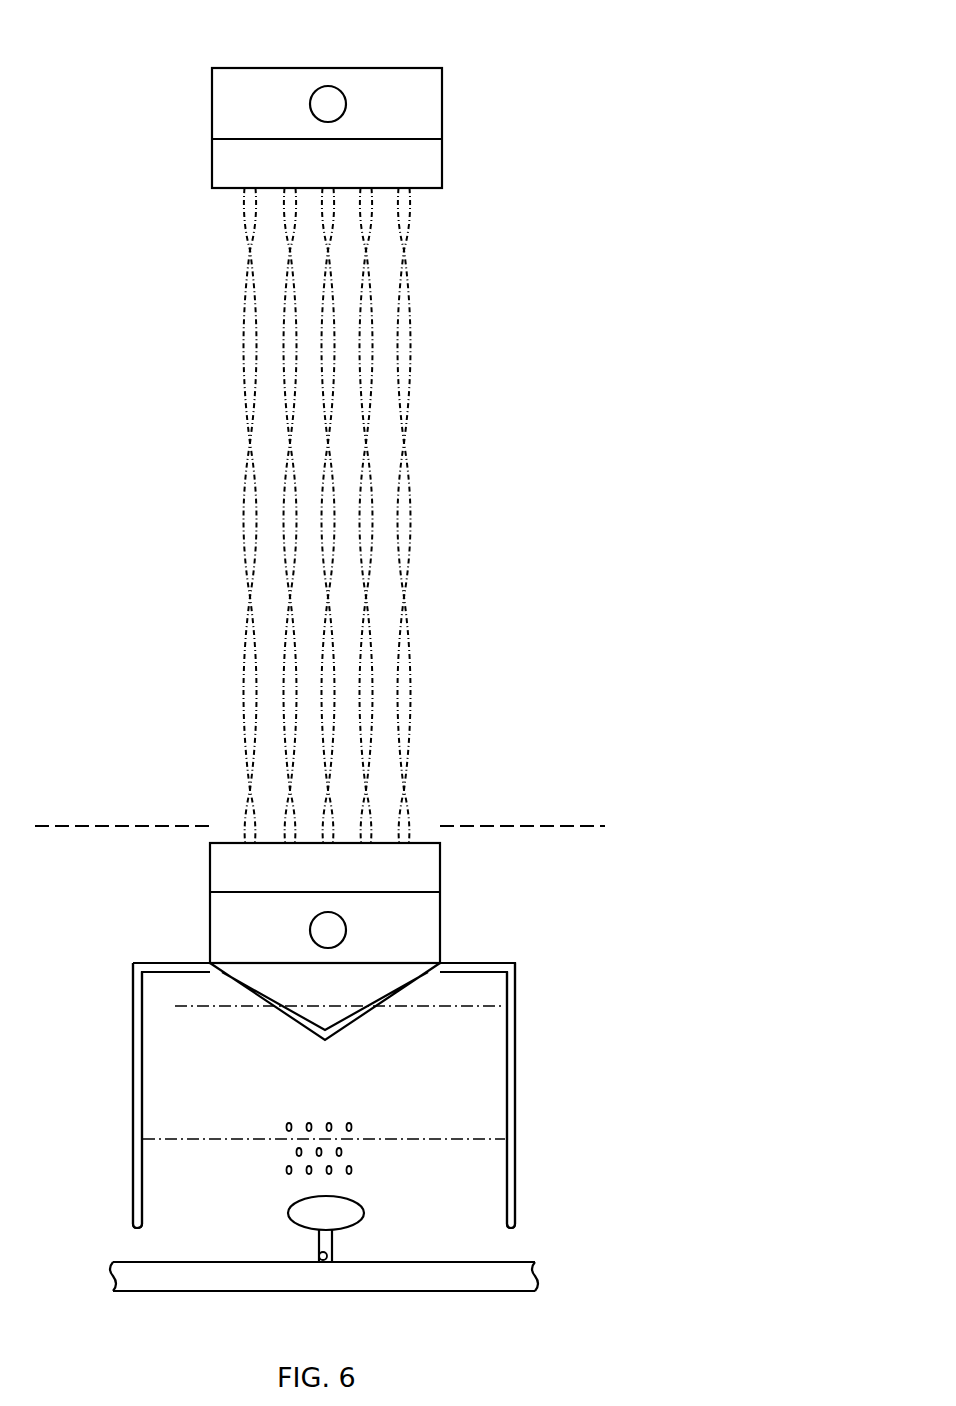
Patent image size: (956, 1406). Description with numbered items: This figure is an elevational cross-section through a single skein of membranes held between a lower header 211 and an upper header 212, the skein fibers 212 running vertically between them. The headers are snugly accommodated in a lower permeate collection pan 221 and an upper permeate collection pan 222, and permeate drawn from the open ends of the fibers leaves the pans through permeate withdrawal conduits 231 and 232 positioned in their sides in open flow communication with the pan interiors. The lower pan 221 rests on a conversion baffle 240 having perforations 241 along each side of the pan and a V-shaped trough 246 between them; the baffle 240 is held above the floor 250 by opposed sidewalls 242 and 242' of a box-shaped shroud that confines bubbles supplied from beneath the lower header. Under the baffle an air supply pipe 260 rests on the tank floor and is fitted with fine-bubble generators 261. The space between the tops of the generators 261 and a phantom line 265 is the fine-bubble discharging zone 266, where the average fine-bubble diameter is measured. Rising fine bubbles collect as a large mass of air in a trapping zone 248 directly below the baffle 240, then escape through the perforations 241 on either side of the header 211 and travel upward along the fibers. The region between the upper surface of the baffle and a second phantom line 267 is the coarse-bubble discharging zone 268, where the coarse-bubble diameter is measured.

The permeate withdrawal conduit 232 is at (328, 86).
The upper permeate collection pan 222 is at (212, 95).
The upper header 212 is at (442, 167).
The phantom line 267 is at (586, 828).
The coarse-bubble discharging zone 268 is at (100, 907).
The lower header 211 is at (210, 868).
The lower permeate collection pan 221 is at (210, 932).
The permeate withdrawal conduit 231 is at (346, 928).
The conversion baffle 240 is at (503, 965).
The trapping zone 248 is at (503, 990).
The V-shaped trough 246 is at (305, 1030).
The perforations 241 is at (180, 972).
The sidewall 242' is at (186, 1095).
The sidewall 242 is at (555, 1095).
The phantom line 265 is at (413, 1135).
The fine-bubble discharging zone 266 is at (218, 1187).
The fine-bubble generator 261 is at (287, 1216).
The air supply pipe 260 is at (340, 1250).
The floor 250 is at (523, 1262).